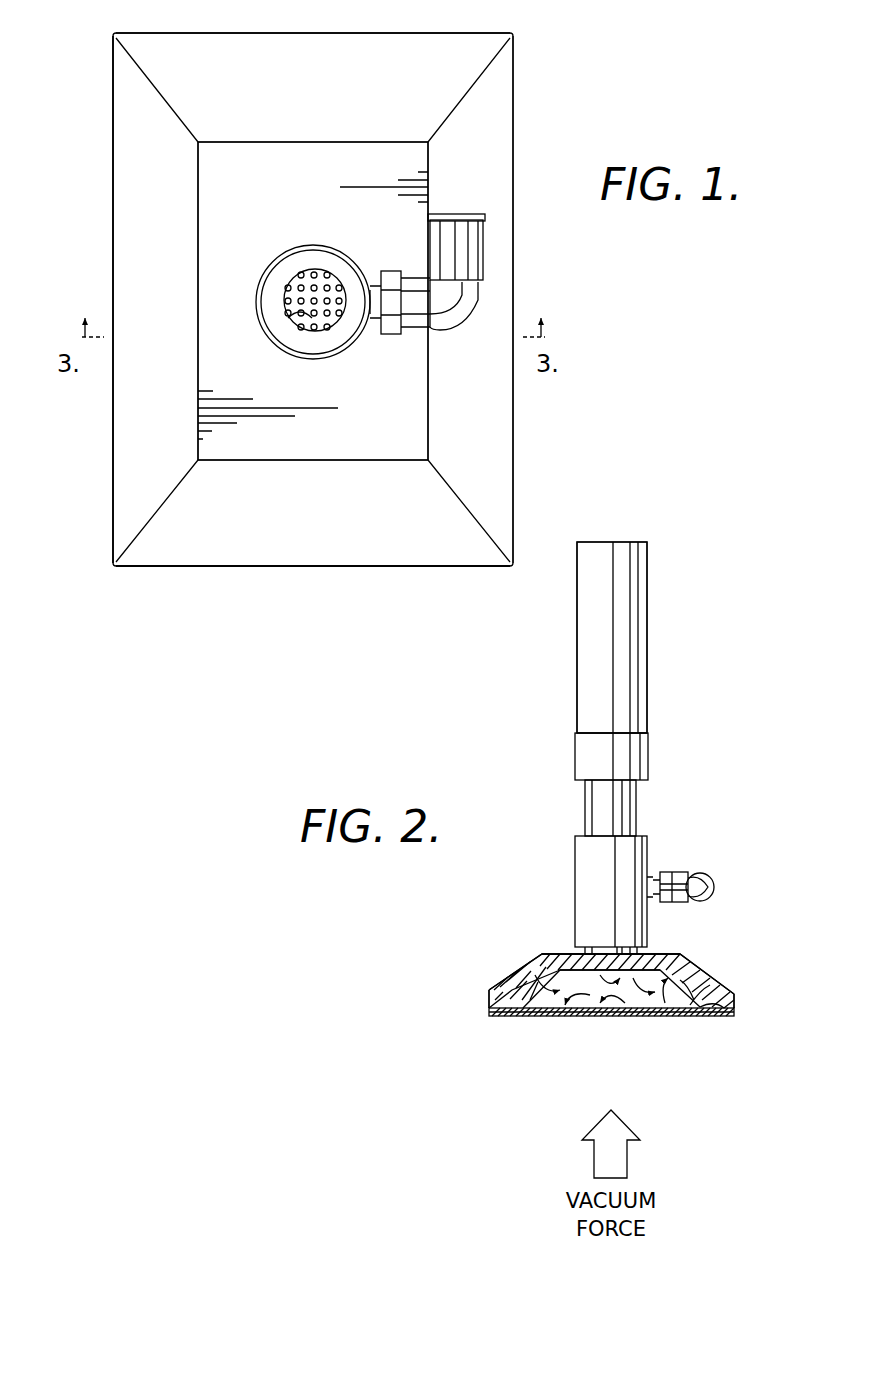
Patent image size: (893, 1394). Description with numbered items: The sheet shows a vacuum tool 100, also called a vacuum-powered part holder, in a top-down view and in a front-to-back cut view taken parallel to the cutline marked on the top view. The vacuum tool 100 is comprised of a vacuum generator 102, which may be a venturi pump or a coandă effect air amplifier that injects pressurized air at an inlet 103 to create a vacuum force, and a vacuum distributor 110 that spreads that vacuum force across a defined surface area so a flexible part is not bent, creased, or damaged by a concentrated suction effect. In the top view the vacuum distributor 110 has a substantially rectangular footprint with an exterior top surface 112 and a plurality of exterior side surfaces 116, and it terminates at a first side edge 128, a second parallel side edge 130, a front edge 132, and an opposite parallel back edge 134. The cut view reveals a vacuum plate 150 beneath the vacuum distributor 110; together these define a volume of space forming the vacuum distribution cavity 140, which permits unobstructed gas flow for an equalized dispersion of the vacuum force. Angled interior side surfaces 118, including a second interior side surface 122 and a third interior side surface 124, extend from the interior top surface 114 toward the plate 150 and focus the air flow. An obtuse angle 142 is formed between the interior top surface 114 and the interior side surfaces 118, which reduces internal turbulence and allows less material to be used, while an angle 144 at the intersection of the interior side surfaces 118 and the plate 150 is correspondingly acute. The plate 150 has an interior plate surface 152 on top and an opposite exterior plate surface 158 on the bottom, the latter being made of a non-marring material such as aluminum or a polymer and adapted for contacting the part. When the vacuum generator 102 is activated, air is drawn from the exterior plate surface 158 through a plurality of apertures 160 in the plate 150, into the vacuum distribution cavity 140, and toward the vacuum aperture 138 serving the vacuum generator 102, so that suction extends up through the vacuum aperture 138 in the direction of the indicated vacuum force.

In FIG. 1, the vacuum tool 100 is at (68, 50).
In FIG. 2, the vacuum tool 100 is at (474, 688).
In FIG. 1, the vacuum generator 102 is at (320, 248).
In FIG. 2, the vacuum generator 102 is at (650, 846).
In FIG. 2, the inlet 103 is at (712, 872).
In FIG. 1, the vacuum distributor 110 is at (318, 200).
In FIG. 2, the vacuum distributor 110 is at (718, 980).
In FIG. 1, the exterior top surface 112 is at (258, 222).
In FIG. 2, the exterior top surface 112 is at (552, 952).
In FIG. 2, the interior top surface 114 is at (672, 958).
In FIG. 1, the exterior side surface 116 is at (125, 134).
In FIG. 2, the interior side surface 118 is at (545, 1022).
In FIG. 2, the second interior side surface 122 is at (608, 1022).
In FIG. 2, the third interior side surface 124 is at (700, 1020).
In FIG. 1, the first side edge 128 is at (110, 455).
In FIG. 1, the second parallel side edge 130 is at (517, 455).
In FIG. 1, the front edge 132 is at (365, 576).
In FIG. 1, the back edge 134 is at (432, 34).
In FIG. 1, the vacuum aperture 138 is at (310, 292).
In FIG. 2, the vacuum aperture 138 is at (650, 940).
In FIG. 2, the vacuum distribution cavity 140 is at (640, 1022).
In FIG. 2, the obtuse angle 142 is at (578, 1020).
In FIG. 2, the angle 144 is at (678, 1018).
In FIG. 1, the vacuum plate 150 is at (296, 322).
In FIG. 2, the vacuum plate 150 is at (742, 1012).
In FIG. 2, the interior plate surface 152 is at (728, 994).
In FIG. 2, the exterior plate surface 158 is at (685, 1022).
In FIG. 2, the apertures 160 is at (530, 1022).